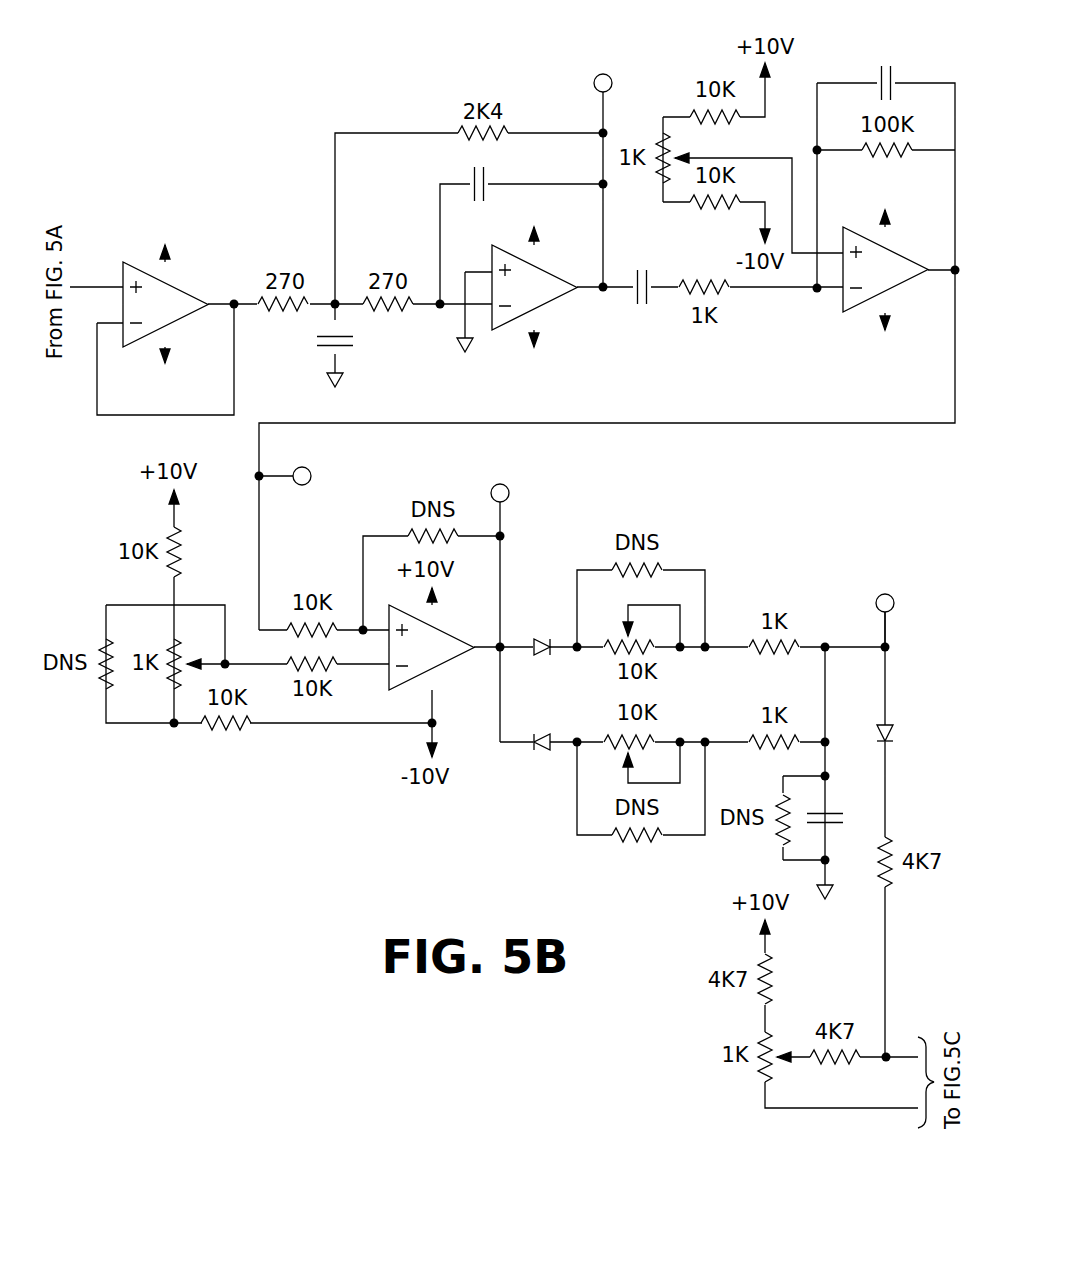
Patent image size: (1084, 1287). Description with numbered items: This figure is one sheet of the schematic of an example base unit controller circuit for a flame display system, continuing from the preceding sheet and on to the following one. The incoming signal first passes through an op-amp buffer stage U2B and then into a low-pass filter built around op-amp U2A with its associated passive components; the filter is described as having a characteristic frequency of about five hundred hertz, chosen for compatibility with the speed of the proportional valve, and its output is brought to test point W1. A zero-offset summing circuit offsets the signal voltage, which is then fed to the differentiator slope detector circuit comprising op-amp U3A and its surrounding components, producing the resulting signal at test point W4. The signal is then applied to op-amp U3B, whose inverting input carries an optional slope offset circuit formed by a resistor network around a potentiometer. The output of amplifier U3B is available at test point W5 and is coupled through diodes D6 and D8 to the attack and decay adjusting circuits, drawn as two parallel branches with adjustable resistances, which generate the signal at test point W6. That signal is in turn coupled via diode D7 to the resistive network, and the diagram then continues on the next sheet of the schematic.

The operational amplifier U2B (buffer) U2B is at (172, 305).
The operational amplifier U2A (filter) U2A is at (541, 289).
The op-amp U3A is at (891, 271).
The op-amp U3B is at (438, 647).
The test point W1 is at (603, 91).
The test point W4 is at (323, 476).
The test point W5 is at (500, 496).
The test point W6 is at (885, 607).
The diode D6 is at (542, 632).
The diode D7 is at (906, 733).
The diode D8 is at (542, 727).